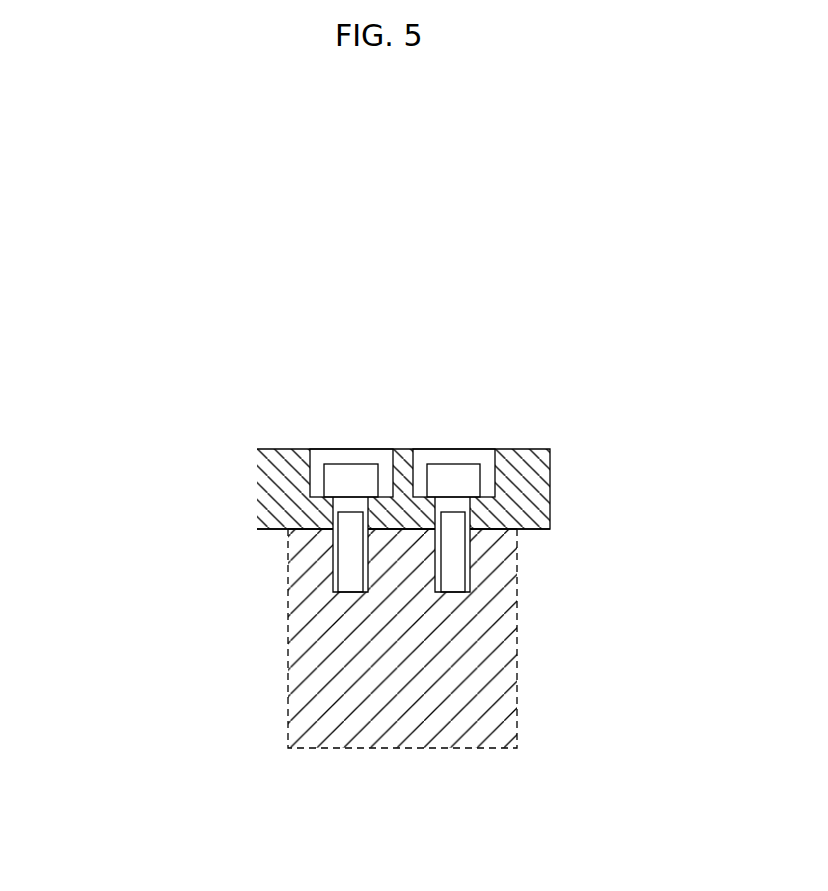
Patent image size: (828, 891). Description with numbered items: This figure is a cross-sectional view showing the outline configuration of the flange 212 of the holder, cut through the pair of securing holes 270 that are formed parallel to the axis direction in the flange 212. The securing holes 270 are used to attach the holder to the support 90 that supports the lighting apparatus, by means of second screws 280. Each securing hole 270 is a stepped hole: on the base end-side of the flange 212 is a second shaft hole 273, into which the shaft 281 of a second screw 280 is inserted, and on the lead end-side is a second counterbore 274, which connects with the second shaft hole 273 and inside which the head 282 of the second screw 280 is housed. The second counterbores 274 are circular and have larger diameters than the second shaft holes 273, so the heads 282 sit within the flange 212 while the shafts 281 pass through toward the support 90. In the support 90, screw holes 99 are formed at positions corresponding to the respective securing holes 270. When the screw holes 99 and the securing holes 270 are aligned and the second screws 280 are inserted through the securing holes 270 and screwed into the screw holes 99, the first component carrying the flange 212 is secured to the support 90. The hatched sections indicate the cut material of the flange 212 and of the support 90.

The support 90 is at (320, 658).
The screw hole 99 is at (333, 545).
The flange 212 is at (262, 517).
The securing hole 270 is at (311, 458).
The second shaft hole 273 is at (260, 482).
The second counterbore 274 is at (308, 466).
The second screw 280 is at (446, 517).
The shaft 281 is at (462, 481).
The head 282 is at (468, 522).